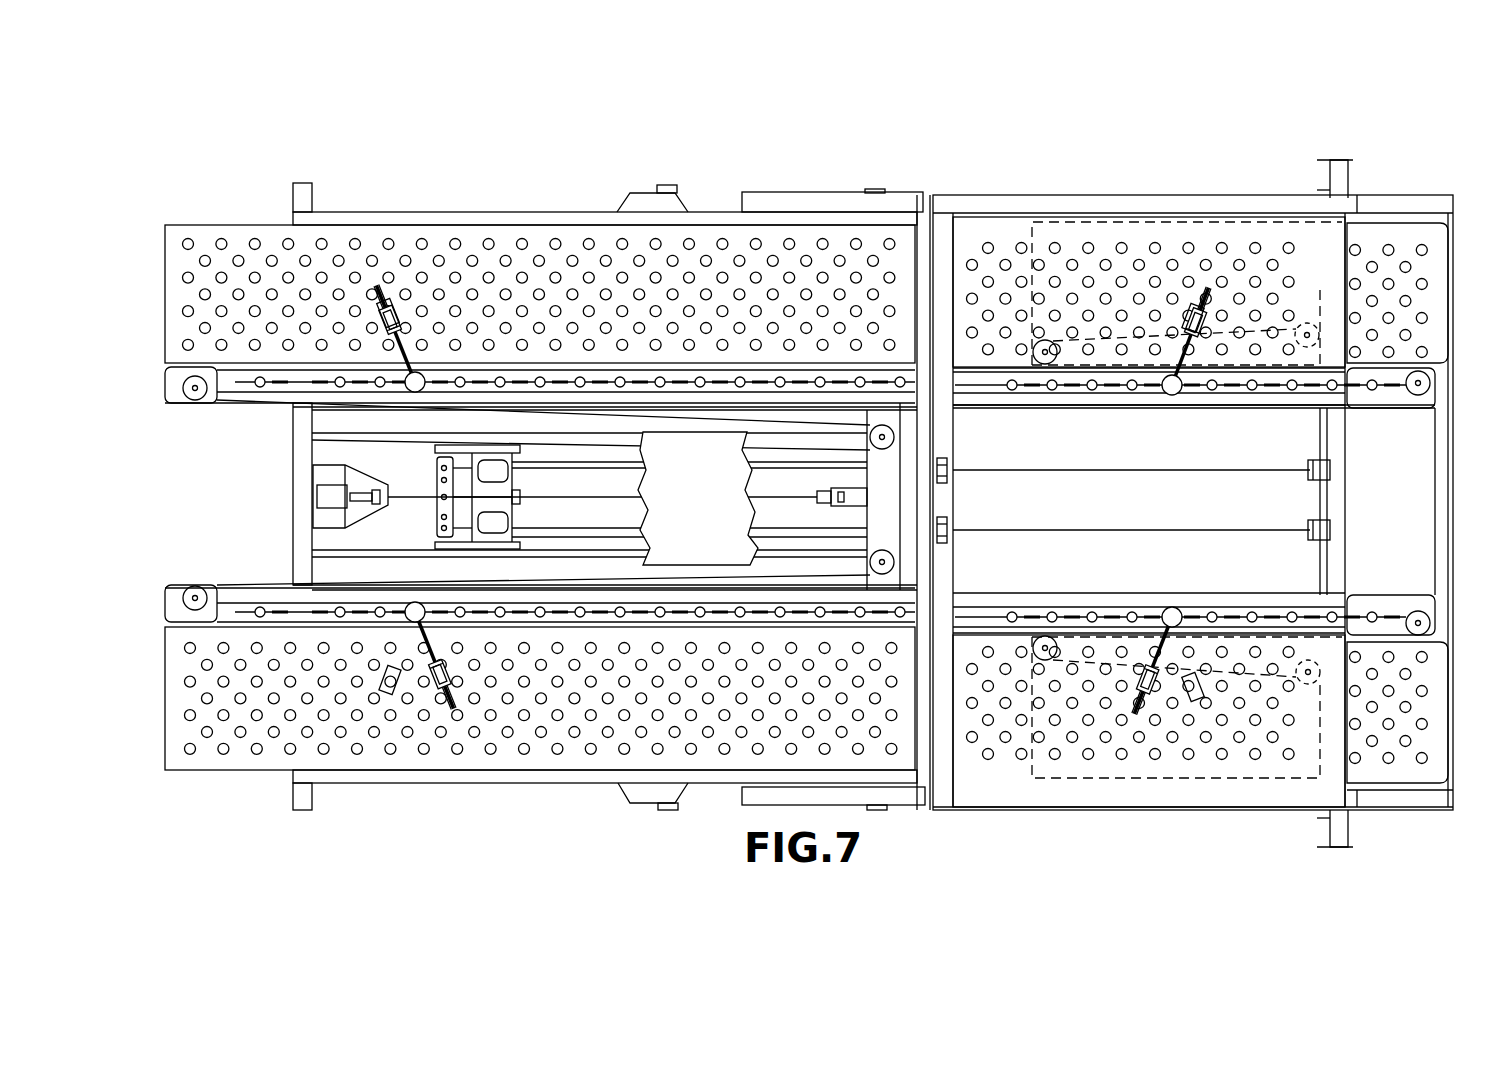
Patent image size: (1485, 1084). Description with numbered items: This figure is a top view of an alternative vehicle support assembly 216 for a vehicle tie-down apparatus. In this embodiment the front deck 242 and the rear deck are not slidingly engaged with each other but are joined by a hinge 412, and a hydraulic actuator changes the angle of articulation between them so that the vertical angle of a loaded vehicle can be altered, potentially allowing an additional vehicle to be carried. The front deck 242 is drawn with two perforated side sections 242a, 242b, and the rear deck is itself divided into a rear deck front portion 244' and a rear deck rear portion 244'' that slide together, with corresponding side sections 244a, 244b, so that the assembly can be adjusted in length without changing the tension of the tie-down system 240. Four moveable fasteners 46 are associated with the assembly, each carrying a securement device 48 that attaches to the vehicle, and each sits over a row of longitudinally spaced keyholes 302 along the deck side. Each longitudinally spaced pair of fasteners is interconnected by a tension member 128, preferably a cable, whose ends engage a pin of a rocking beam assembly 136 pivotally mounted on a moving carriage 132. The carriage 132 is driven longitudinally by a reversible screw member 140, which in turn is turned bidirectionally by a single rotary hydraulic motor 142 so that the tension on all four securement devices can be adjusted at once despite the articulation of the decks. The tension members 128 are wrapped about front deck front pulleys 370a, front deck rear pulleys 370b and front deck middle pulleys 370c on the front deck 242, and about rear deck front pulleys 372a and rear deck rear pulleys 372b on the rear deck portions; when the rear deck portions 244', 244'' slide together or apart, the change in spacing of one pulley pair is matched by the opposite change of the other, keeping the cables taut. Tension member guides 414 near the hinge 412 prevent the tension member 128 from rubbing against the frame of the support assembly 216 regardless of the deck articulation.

The vehicle support assembly 216 is at (1007, 138).
The front deck 242 is at (535, 197).
The upper perforated panel 242a is at (413, 235).
The lower perforated panel 242b is at (480, 772).
The rear deck front portion 244' is at (1193, 475).
The rear deck rear portion 244'' is at (1398, 563).
The upper right perforated panel 244a is at (1055, 235).
The lower right perforated panel 244b is at (1117, 778).
The hinge 412 is at (923, 200).
The tension member guides 414 is at (948, 470).
The moveable fastener 46 is at (370, 270).
The securement device 48 is at (380, 318).
The tie-down system 240 is at (473, 428).
The drive chain 302 is at (582, 367).
The left pulley 370a is at (195, 405).
The guide 370b is at (1316, 320).
The center pulley 370c is at (905, 437).
The pulley region 372a is at (1045, 366).
The right pulley 372b is at (1418, 398).
The tension member 128 is at (705, 570).
The reversible screw member 140 is at (630, 488).
The rotary hydraulic motor 142 is at (318, 497).
The moving carriage 132 is at (480, 510).
The rocking beam assembly 136 is at (437, 470).